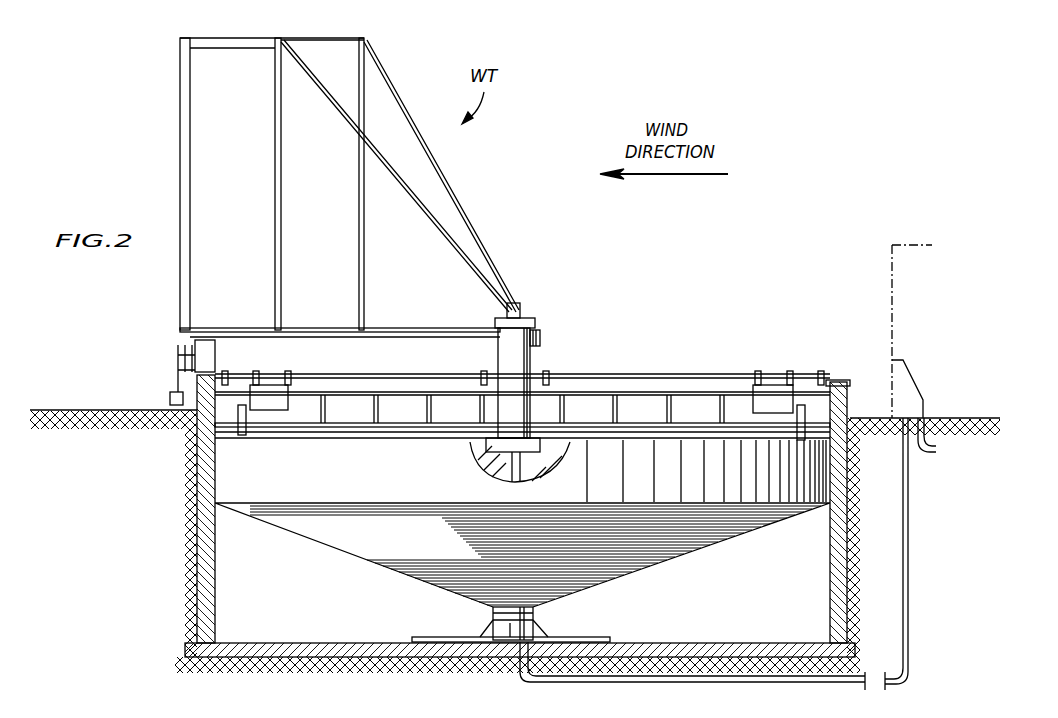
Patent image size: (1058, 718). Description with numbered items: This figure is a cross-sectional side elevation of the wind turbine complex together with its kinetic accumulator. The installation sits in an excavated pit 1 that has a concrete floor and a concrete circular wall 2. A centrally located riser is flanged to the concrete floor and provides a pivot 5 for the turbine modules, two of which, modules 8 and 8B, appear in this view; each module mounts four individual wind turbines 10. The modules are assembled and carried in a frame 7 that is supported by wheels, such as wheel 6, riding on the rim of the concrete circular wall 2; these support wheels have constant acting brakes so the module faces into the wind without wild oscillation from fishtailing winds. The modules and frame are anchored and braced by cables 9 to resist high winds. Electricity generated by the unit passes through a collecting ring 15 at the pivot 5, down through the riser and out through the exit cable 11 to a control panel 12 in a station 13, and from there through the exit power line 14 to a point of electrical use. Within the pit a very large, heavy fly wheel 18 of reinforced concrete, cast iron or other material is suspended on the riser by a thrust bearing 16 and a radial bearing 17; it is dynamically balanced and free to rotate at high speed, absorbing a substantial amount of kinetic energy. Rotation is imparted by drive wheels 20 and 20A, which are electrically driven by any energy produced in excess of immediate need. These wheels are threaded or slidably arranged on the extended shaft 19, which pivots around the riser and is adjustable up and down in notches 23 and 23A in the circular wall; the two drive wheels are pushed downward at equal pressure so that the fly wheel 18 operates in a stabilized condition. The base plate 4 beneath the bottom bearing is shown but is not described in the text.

The excavated pit 1 is at (318, 596).
The concrete circular wall 2 is at (195, 478).
The base plate 4 is at (576, 637).
The pivot 5 is at (542, 325).
The wheel 6 is at (205, 344).
The frame 7 is at (180, 78).
The turbine module 8 is at (220, 60).
The turbine module 8B is at (326, 46).
The cables 9 is at (340, 112).
The wind turbine 10 is at (280, 246).
The exit cable 11 is at (722, 682).
The control panel 12 is at (893, 364).
The station 13 is at (892, 300).
The exit power line 14 is at (928, 456).
The collecting ring 15 is at (522, 310).
The thrust bearing 16 is at (492, 616).
The radial bearing 17 is at (490, 456).
The fly wheel 18 is at (380, 477).
The extended shaft 19 is at (610, 376).
The drive wheel 20 is at (802, 404).
The drive wheel 20A is at (242, 438).
The notch 23 is at (848, 388).
The notch 23A is at (192, 382).